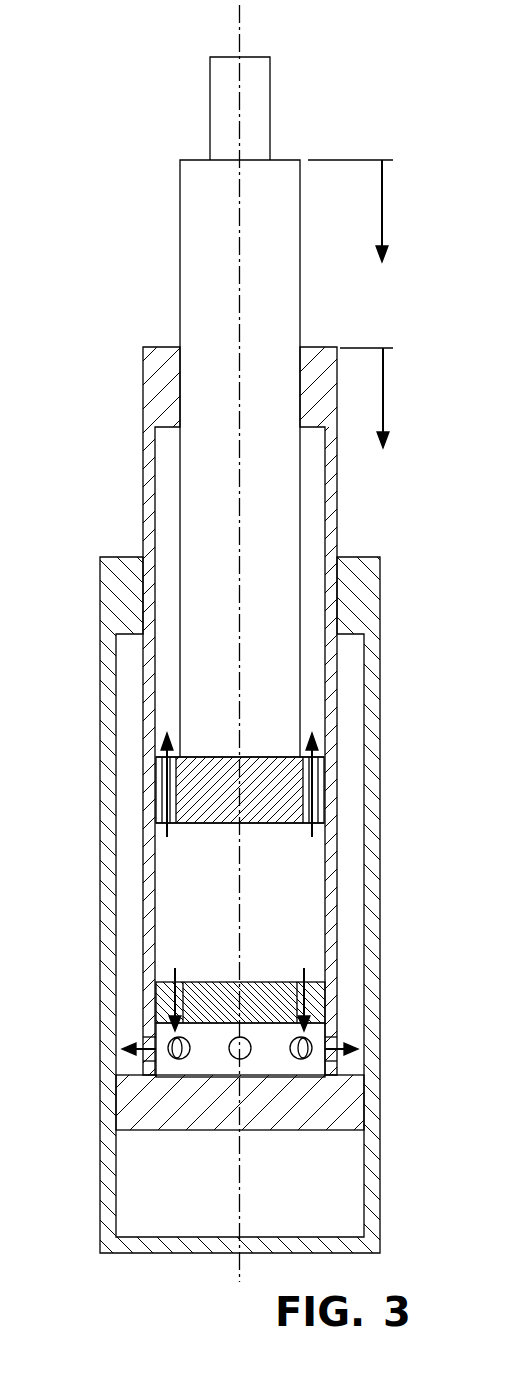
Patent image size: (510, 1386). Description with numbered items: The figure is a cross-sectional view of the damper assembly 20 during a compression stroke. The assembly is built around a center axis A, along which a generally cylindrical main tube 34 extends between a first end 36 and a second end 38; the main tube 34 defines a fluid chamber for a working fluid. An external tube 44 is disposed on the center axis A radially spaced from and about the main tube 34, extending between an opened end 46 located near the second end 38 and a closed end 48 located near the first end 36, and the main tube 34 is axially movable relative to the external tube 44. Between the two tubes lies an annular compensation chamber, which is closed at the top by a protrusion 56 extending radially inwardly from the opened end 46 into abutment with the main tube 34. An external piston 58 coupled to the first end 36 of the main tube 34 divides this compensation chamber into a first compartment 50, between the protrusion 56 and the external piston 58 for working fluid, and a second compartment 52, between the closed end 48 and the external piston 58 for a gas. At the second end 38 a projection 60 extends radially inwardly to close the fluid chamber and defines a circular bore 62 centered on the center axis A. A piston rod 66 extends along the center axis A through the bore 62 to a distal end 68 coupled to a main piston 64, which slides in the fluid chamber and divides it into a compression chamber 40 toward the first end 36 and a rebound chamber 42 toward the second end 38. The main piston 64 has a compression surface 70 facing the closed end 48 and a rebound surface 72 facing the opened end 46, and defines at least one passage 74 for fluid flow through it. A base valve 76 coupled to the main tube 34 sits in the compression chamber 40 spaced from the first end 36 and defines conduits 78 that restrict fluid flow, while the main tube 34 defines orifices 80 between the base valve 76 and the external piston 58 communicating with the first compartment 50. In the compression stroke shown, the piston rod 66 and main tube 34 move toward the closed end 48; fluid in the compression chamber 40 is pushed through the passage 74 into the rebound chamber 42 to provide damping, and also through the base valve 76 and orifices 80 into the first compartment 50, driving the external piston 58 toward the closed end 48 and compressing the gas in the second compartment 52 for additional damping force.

The damper assembly 20 is at (64, 336).
The main tube 34 is at (143, 455).
The first end 36 is at (333, 1064).
The second end 38 is at (333, 348).
The compression chamber 40 is at (330, 903).
The rebound chamber 42 is at (325, 529).
The external tube 44 is at (379, 850).
The opened end 46 is at (100, 557).
The closed end 48 is at (100, 1251).
The first compartment 50 is at (368, 690).
The second compartment 52 is at (365, 1190).
The protrusion 56 is at (120, 572).
The external piston 58 is at (150, 1097).
The projection 60 is at (168, 373).
The bore 62 is at (298, 402).
The main piston 64 is at (290, 803).
The piston rod 66 is at (190, 236).
The distal end 68 is at (283, 757).
The compression surface 70 is at (197, 823).
The rebound surface 72 is at (193, 757).
The passage 74 is at (165, 797).
The base valve 76 is at (146, 1005).
The conduit 78 is at (327, 985).
The orifice 80 is at (336, 1035).
The center axis A is at (242, 54).